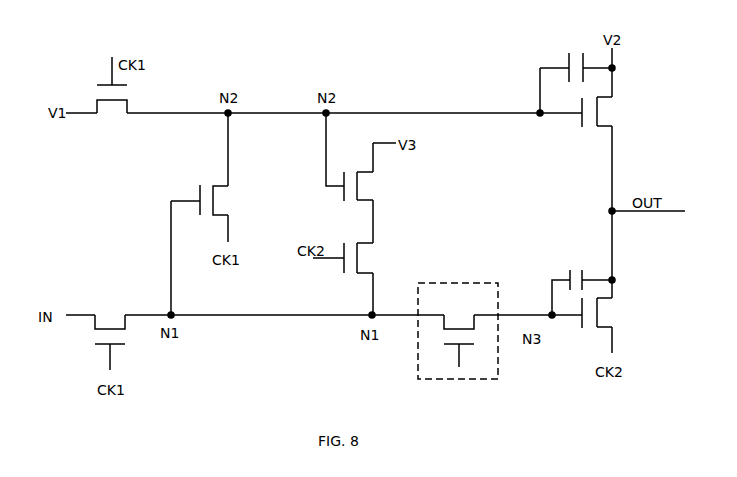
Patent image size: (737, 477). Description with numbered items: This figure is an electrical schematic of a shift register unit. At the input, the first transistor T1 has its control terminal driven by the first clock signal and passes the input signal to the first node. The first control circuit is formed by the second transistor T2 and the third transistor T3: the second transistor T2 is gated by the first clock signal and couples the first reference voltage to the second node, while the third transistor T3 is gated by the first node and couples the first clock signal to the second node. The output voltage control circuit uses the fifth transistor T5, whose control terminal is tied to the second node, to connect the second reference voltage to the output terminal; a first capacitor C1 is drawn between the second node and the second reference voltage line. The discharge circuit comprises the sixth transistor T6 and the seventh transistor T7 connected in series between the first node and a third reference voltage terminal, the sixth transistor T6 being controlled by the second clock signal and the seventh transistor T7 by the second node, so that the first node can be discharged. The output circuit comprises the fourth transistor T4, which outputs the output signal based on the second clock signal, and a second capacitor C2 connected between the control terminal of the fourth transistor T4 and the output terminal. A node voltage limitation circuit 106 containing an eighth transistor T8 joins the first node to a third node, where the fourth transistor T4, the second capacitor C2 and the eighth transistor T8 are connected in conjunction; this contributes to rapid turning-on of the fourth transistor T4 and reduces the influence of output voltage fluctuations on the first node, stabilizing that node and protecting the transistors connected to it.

The node voltage limitation circuit 106 is at (458, 321).
The first transistor T1 is at (110, 333).
The second transistor T2 is at (112, 98).
The third transistor T3 is at (203, 200).
The fourth transistor T4 is at (606, 313).
The fifth transistor T5 is at (605, 112).
The sixth transistor T6 is at (369, 258).
The seventh transistor T7 is at (368, 186).
The eighth transistor T8 is at (459, 332).
The first capacitor C1 is at (564, 63).
The second capacitor C2 is at (577, 274).